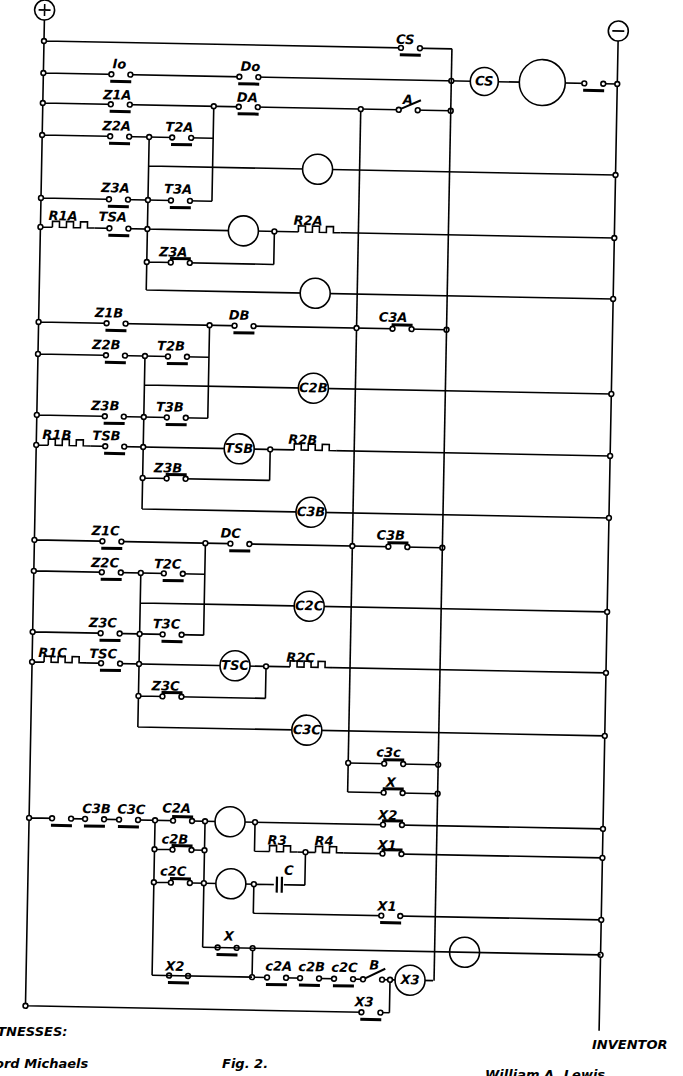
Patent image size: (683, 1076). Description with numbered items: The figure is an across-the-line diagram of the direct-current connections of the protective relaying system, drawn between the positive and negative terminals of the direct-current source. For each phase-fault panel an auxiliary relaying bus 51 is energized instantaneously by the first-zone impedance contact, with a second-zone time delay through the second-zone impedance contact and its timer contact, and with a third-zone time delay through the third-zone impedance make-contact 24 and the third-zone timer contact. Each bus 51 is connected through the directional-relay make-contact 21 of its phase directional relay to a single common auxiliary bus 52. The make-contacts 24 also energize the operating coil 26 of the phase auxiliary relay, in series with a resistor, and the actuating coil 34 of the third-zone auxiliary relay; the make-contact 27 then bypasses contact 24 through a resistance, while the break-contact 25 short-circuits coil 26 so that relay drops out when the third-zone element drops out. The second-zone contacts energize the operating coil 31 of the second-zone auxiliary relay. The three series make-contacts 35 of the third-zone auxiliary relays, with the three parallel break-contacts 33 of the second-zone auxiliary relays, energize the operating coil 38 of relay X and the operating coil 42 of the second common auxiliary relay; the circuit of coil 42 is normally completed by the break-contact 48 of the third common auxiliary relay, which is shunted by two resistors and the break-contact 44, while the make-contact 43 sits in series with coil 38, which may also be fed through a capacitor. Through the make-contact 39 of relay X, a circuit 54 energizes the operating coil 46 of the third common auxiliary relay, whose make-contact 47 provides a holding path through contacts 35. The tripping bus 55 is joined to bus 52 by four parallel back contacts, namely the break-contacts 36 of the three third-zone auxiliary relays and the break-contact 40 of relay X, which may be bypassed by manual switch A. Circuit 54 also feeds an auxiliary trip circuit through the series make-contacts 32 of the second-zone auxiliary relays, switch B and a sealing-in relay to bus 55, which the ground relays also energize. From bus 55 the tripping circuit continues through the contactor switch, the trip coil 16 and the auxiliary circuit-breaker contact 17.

The trip coil 16 is at (565, 54).
The auxiliary circuit-breaker contact 17 is at (600, 69).
The make-contact 21 is at (258, 105).
The make-contact 24 is at (107, 196).
The break-contact 25 is at (192, 264).
The operating coil 26 is at (247, 218).
The make-contact 27 is at (133, 231).
The operating coil 31 is at (319, 158).
The make-contact 32 is at (272, 978).
The break-contact 33 is at (212, 811).
The actuating coil 34 is at (319, 277).
The make-contact 35 is at (67, 820).
The break-contact 36 is at (406, 331).
The operating coil 38 is at (250, 874).
The make-contact 39 is at (255, 944).
The break-contact 40 is at (417, 789).
The operating coil 42 is at (254, 802).
The make-contact 43 is at (417, 908).
The break-contact 44 is at (409, 856).
The operating coil 46 is at (487, 938).
The make-contact 47 is at (205, 974).
The break-contact 48 is at (412, 825).
The auxiliary relaying bus 51 is at (215, 100).
The common auxiliary relaying bus 52 is at (362, 104).
The circuit 54 is at (301, 943).
The tripping bus 55 is at (453, 71).